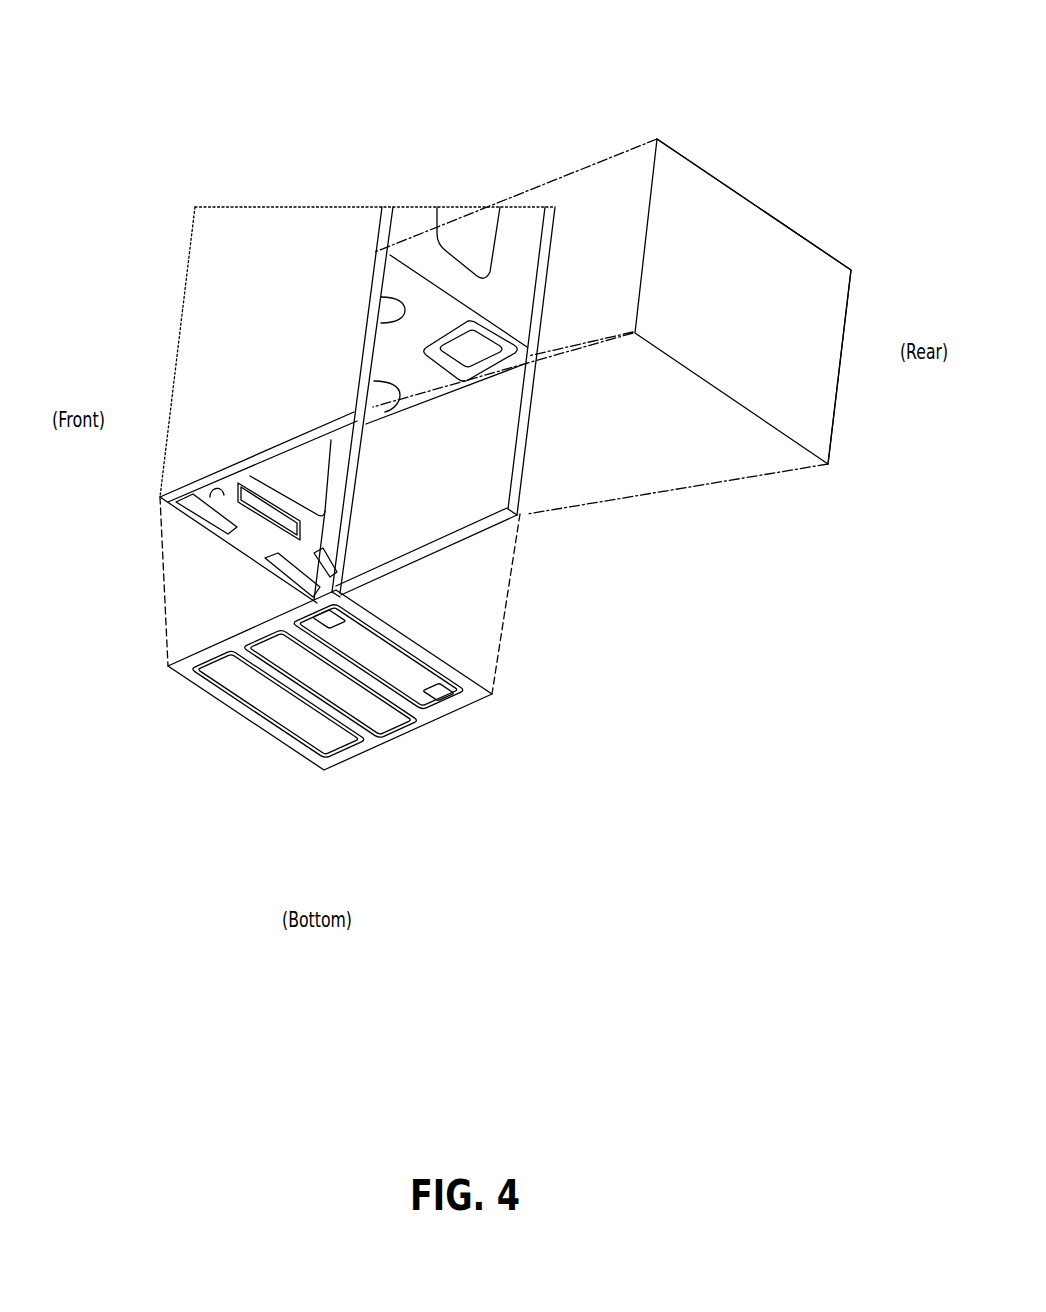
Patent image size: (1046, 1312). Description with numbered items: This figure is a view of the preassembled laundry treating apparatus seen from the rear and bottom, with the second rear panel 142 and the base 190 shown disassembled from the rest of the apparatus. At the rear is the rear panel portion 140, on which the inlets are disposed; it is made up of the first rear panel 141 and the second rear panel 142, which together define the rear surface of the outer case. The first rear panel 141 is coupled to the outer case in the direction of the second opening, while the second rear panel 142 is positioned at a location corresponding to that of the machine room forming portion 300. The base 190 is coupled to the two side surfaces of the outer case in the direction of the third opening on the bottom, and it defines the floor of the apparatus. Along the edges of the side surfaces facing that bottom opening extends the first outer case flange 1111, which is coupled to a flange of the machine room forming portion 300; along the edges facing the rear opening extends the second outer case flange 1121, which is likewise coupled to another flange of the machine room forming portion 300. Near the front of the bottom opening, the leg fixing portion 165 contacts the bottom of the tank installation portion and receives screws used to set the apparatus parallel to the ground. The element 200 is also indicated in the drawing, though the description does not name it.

The rear panel portion 140 is at (721, 67).
The first rear panel 141 is at (510, 233).
The second rear panel 142 is at (701, 185).
The first outer case flange 1111 is at (160, 483).
The second outer case flange 1121 is at (377, 292).
The leg fixing portion 165 is at (250, 537).
The base plate 200 is at (370, 467).
The machine room forming portion 300 is at (428, 518).
The base 190 is at (410, 727).